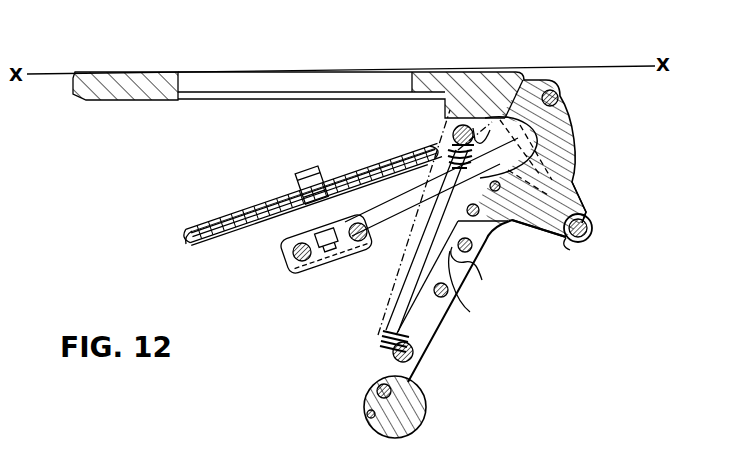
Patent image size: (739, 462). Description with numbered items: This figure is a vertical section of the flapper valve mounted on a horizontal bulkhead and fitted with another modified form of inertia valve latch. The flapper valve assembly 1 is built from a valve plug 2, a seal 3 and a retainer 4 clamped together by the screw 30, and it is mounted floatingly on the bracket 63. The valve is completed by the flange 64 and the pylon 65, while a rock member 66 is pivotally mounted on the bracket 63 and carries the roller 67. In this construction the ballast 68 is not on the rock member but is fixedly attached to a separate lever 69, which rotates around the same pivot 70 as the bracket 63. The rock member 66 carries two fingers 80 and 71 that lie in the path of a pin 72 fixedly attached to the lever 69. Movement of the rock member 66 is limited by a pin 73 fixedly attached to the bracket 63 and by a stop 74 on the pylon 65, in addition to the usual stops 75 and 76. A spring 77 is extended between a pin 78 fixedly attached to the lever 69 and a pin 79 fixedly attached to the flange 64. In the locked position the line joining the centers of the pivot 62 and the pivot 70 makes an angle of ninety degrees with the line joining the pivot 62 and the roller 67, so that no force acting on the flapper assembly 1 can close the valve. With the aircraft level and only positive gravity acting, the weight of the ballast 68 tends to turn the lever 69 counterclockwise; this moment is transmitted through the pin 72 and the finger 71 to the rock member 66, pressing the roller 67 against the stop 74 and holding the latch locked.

The flapper valve assembly 1 is at (211, 212).
The valve plug 2 is at (238, 232).
The seal 3 is at (186, 240).
The retainer 4 is at (252, 216).
The screw 30 is at (302, 186).
The pivot 62 is at (500, 183).
The bracket 63 is at (387, 238).
The flange 64 is at (468, 73).
The pylon 65 is at (557, 116).
The rock member 66 is at (492, 234).
The roller 67 is at (594, 229).
The ballast 68 is at (366, 402).
The lever 69 is at (432, 324).
The pivot 70 is at (555, 92).
The finger 71 is at (474, 255).
The pin 72 is at (460, 247).
The pin 73 is at (482, 205).
The stop 74 is at (594, 217).
The stop 75 is at (480, 190).
The stop 76 is at (568, 247).
The spring 77 is at (383, 341).
The pin 78 is at (412, 361).
The pin 79 is at (452, 133).
The finger 80 is at (448, 252).